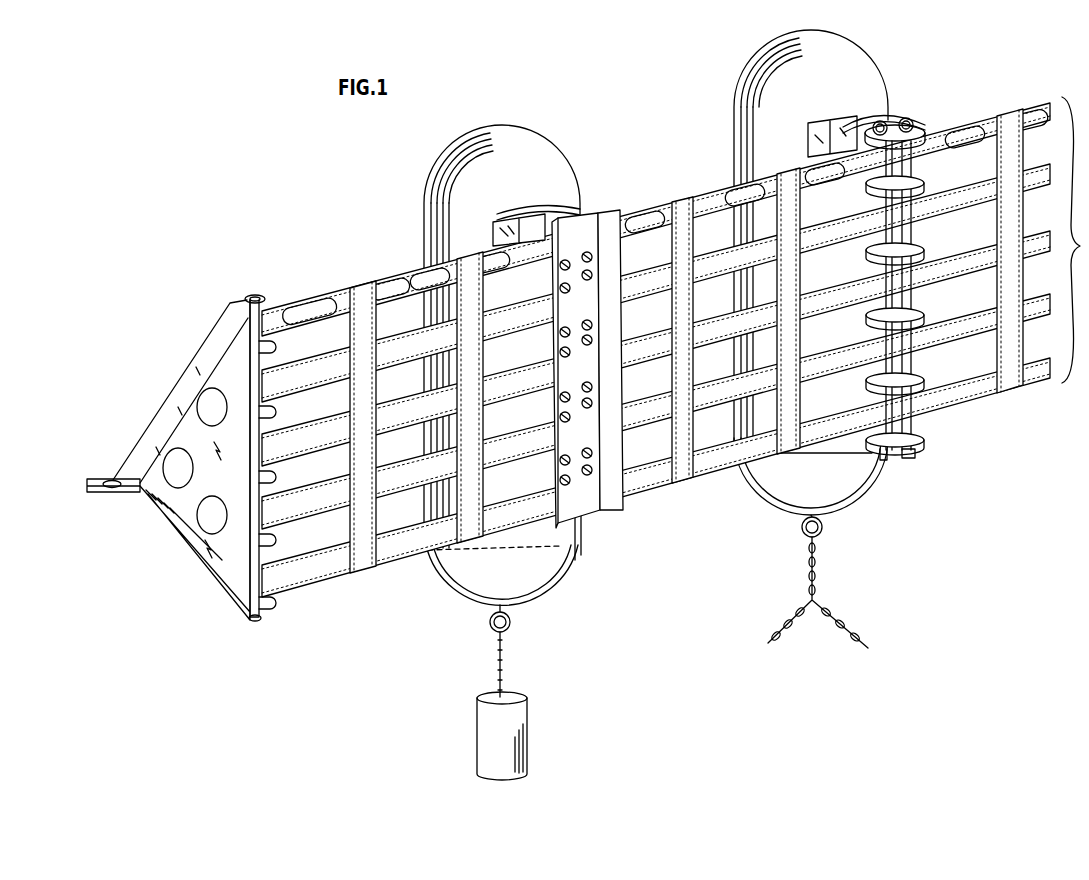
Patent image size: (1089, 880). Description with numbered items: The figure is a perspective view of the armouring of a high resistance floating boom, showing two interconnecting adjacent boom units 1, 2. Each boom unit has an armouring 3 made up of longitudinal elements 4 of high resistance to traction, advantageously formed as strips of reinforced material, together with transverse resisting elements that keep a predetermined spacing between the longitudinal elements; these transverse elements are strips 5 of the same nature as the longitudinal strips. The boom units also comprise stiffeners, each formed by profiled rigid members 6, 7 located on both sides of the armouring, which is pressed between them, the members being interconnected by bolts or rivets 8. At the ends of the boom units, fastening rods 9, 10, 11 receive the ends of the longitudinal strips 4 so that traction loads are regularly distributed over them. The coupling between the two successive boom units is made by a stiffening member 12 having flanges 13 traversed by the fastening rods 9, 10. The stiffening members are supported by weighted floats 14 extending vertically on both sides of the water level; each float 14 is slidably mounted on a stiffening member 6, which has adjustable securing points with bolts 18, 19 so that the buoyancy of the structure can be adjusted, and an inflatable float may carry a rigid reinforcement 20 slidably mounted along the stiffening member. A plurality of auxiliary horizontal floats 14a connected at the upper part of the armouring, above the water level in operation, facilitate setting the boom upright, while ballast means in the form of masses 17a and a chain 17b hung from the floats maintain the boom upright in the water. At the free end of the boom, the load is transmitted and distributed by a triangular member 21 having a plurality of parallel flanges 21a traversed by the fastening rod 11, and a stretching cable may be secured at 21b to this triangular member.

The boom unit 1 is at (296, 230).
The boom unit 2 is at (1005, 94).
The armouring 3 is at (1075, 240).
The longitudinal elements 4 is at (320, 568).
The transverse strips 5 is at (686, 483).
The profiled rigid member 6 is at (578, 211).
The profiled rigid member 7 is at (612, 213).
The bolts or rivets 8 is at (570, 483).
The fastening rod 9 is at (884, 458).
The fastening rod 10 is at (912, 458).
The fastening rod 11 is at (256, 622).
The stiffening member 12 is at (900, 122).
The flanges 13 is at (907, 322).
The float 14 is at (547, 161).
The auxiliary horizontal floats 14a is at (392, 290).
The ballast masses 17a is at (527, 742).
The ballast chain 17b is at (812, 582).
The bolt 18 is at (592, 479).
The bolt 19 is at (900, 415).
The rigid reinforcement 20 is at (496, 234).
The triangular member 21 is at (203, 548).
The parallel flanges 21a is at (270, 607).
The cable securing point 21b is at (140, 483).